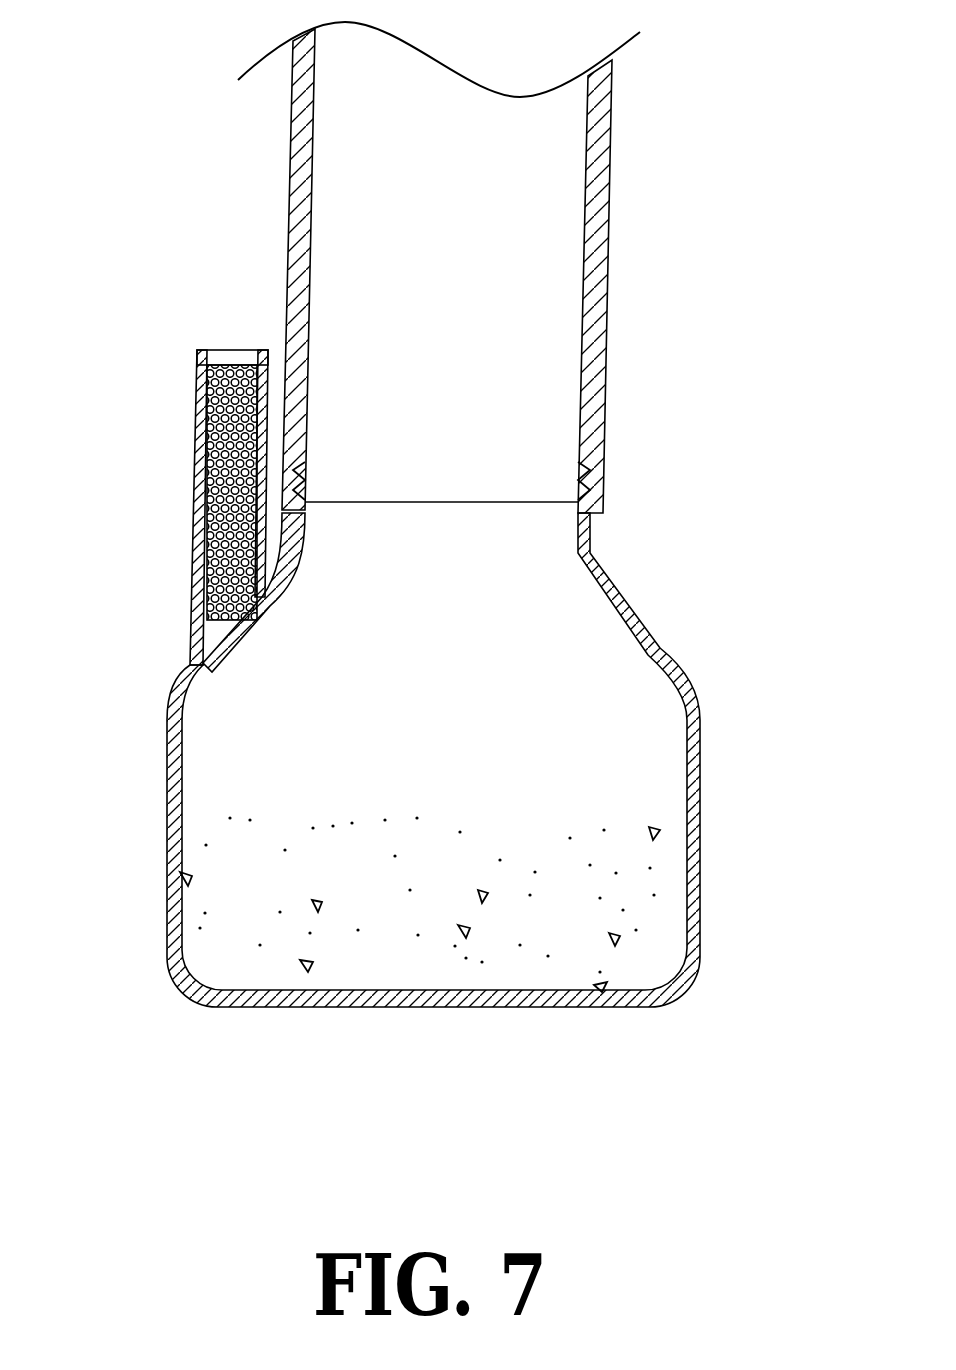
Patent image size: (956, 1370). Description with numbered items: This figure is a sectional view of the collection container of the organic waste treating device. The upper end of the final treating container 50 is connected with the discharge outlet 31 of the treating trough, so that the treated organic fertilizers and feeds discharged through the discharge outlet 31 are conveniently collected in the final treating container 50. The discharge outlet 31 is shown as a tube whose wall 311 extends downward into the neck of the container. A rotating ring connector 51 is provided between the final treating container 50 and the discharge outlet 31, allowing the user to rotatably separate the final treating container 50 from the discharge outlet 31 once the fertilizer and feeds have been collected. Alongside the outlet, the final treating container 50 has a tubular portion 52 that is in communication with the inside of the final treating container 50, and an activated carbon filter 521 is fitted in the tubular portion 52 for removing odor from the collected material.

The discharge outlet 31 is at (606, 213).
The tube wall 311 is at (672, 322).
The rotating ring connector 51 is at (603, 482).
The final treating container 50 is at (685, 672).
The tubular portion 52 is at (197, 515).
The activated carbon filter 521 is at (235, 365).